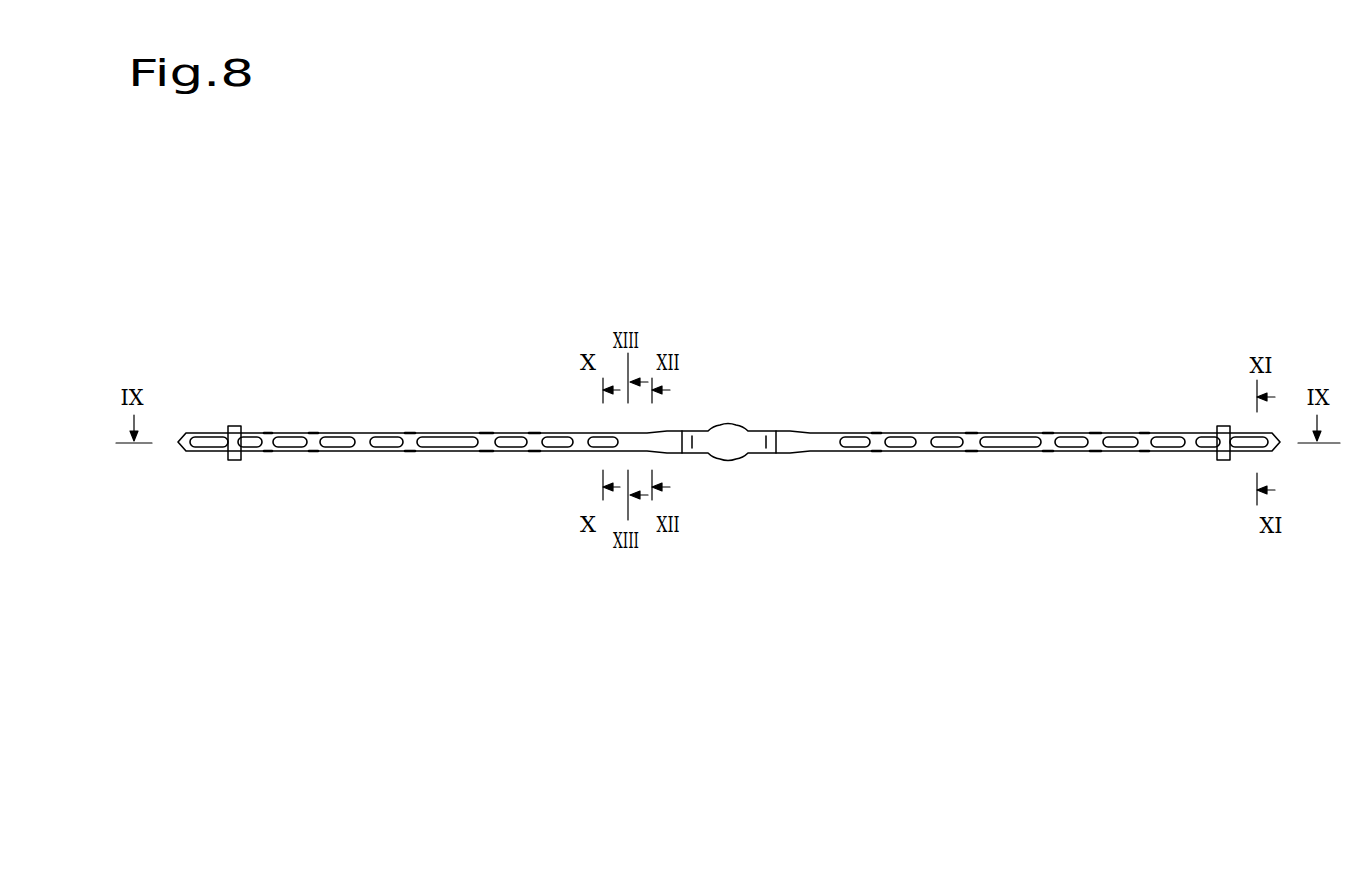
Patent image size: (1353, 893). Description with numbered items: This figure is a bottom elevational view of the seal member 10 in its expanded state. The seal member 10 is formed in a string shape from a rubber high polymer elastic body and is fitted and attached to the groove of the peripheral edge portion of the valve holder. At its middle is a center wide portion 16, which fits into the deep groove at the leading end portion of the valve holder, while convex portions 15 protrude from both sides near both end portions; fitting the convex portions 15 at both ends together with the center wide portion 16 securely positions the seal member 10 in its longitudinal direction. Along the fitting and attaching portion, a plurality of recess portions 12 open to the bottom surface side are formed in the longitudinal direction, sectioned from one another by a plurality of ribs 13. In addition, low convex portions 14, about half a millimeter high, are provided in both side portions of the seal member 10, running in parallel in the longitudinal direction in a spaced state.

The seal member 10 is at (831, 412).
The recess portion 12 is at (387, 444).
The rib 13 is at (413, 452).
The low convex portion 14 is at (318, 433).
The convex portion 15 is at (234, 426).
The center wide portion 16 is at (716, 431).